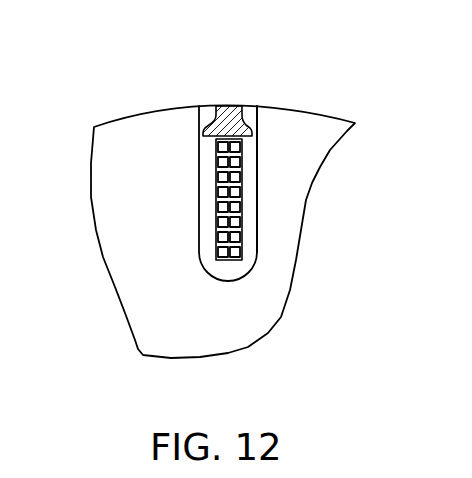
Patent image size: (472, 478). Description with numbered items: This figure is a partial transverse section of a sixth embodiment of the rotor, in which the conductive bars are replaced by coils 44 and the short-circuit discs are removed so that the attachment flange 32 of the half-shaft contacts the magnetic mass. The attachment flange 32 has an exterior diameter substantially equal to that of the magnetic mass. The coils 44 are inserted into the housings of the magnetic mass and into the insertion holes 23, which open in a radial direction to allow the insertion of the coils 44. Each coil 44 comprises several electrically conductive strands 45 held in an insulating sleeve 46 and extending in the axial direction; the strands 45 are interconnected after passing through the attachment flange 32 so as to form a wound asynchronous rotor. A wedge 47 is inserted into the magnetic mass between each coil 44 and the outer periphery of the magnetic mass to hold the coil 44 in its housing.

The insertion hole 23 is at (265, 112).
The attachment flange 32 is at (307, 128).
The coil 44 is at (227, 265).
The electrically conductive strand 45 is at (243, 232).
The insulating sleeve 46 is at (243, 212).
The wedge 47 is at (227, 105).